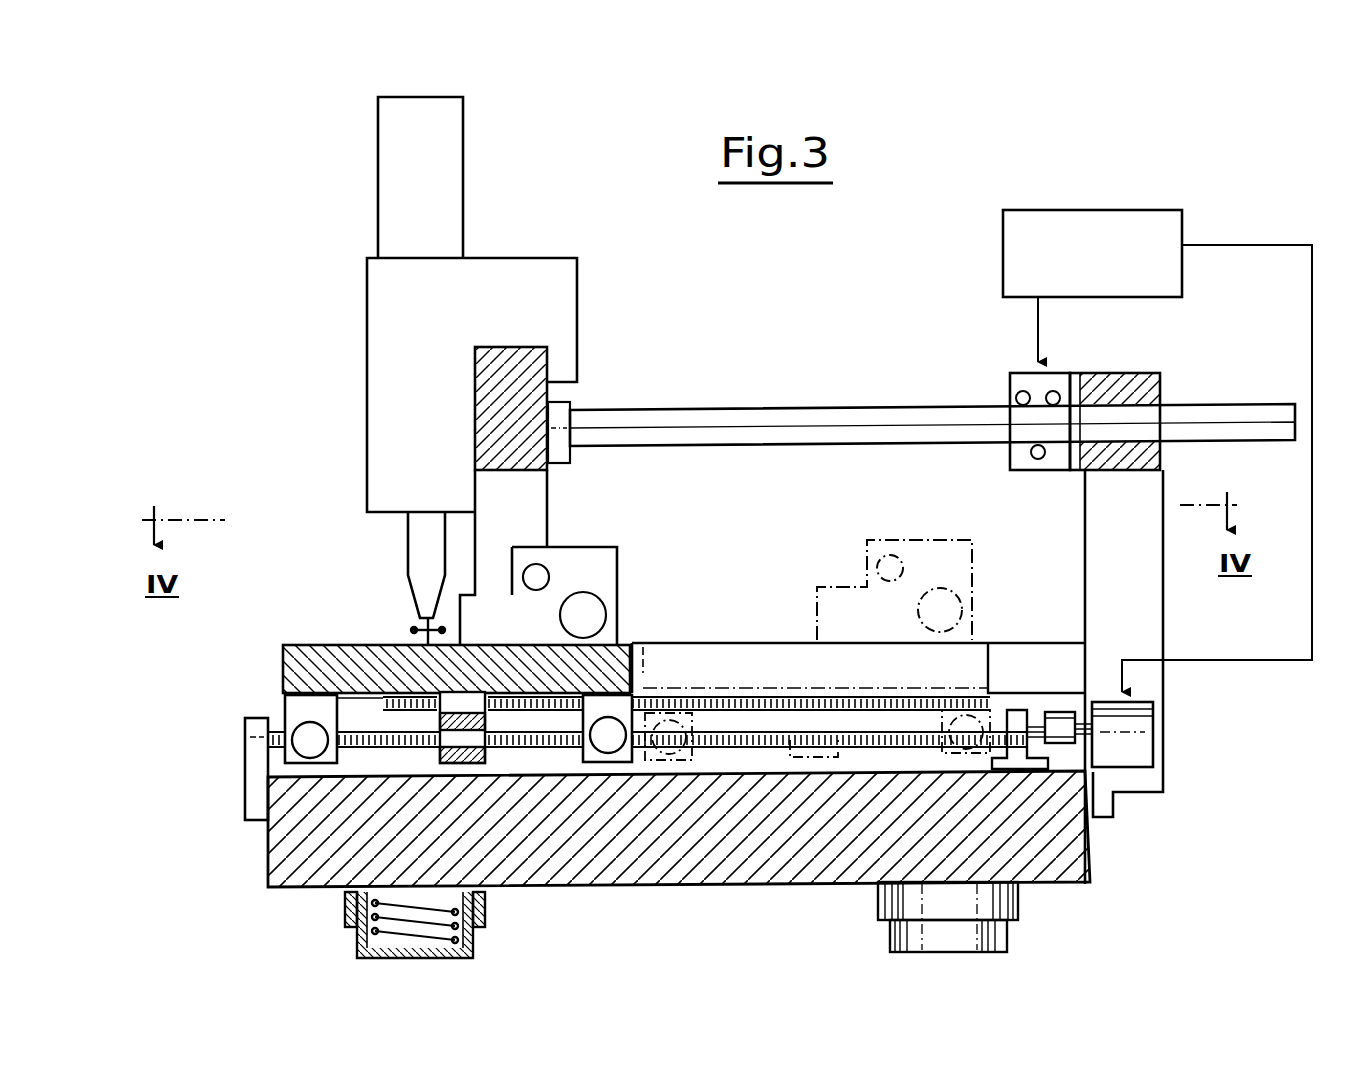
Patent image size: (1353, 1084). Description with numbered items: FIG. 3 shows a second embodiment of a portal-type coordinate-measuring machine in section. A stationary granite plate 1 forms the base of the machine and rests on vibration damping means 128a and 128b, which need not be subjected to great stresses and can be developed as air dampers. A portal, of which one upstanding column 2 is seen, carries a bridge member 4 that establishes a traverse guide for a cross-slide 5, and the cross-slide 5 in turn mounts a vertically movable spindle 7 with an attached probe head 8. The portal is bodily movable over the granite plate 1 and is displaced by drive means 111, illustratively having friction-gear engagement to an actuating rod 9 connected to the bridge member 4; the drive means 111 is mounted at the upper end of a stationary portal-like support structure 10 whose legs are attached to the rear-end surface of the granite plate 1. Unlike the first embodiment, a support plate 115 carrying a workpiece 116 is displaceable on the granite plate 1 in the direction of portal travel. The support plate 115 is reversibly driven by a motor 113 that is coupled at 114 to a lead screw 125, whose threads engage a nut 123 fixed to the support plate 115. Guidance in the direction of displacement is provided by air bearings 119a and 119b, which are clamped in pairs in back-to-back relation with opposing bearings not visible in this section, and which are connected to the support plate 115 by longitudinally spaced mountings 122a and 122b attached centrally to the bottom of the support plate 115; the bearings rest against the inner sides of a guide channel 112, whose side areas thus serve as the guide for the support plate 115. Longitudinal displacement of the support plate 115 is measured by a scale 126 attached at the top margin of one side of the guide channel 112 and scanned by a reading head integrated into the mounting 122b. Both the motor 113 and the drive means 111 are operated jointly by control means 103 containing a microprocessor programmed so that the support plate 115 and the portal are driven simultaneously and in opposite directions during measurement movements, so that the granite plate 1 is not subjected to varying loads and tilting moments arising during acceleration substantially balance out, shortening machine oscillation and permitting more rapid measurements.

The granite plate 1 is at (1075, 833).
The portal column 2 is at (530, 519).
The bridge member 4 is at (543, 393).
The cross-slide 5 is at (560, 316).
The spindle 7 is at (423, 532).
The probe head 8 is at (412, 605).
The actuating rod 9 is at (816, 412).
The support structure 10 is at (1137, 625).
The control means 103 is at (1090, 297).
The drive means 111 is at (1035, 457).
The guide channel 112 is at (478, 773).
The motor 113 is at (1142, 750).
The coupling 114 is at (1062, 720).
The support plate 115 is at (622, 645).
The workpiece 116 is at (603, 545).
The air bearing 119a is at (315, 742).
The air bearing 119b is at (608, 740).
The mounting 122a is at (300, 707).
The mounting 122b is at (585, 755).
The nut 123 is at (440, 757).
The lead screw 125 is at (747, 737).
The scale 126 is at (771, 693).
The vibration damping means 128a is at (355, 947).
The vibration damping means 128b is at (1007, 937).